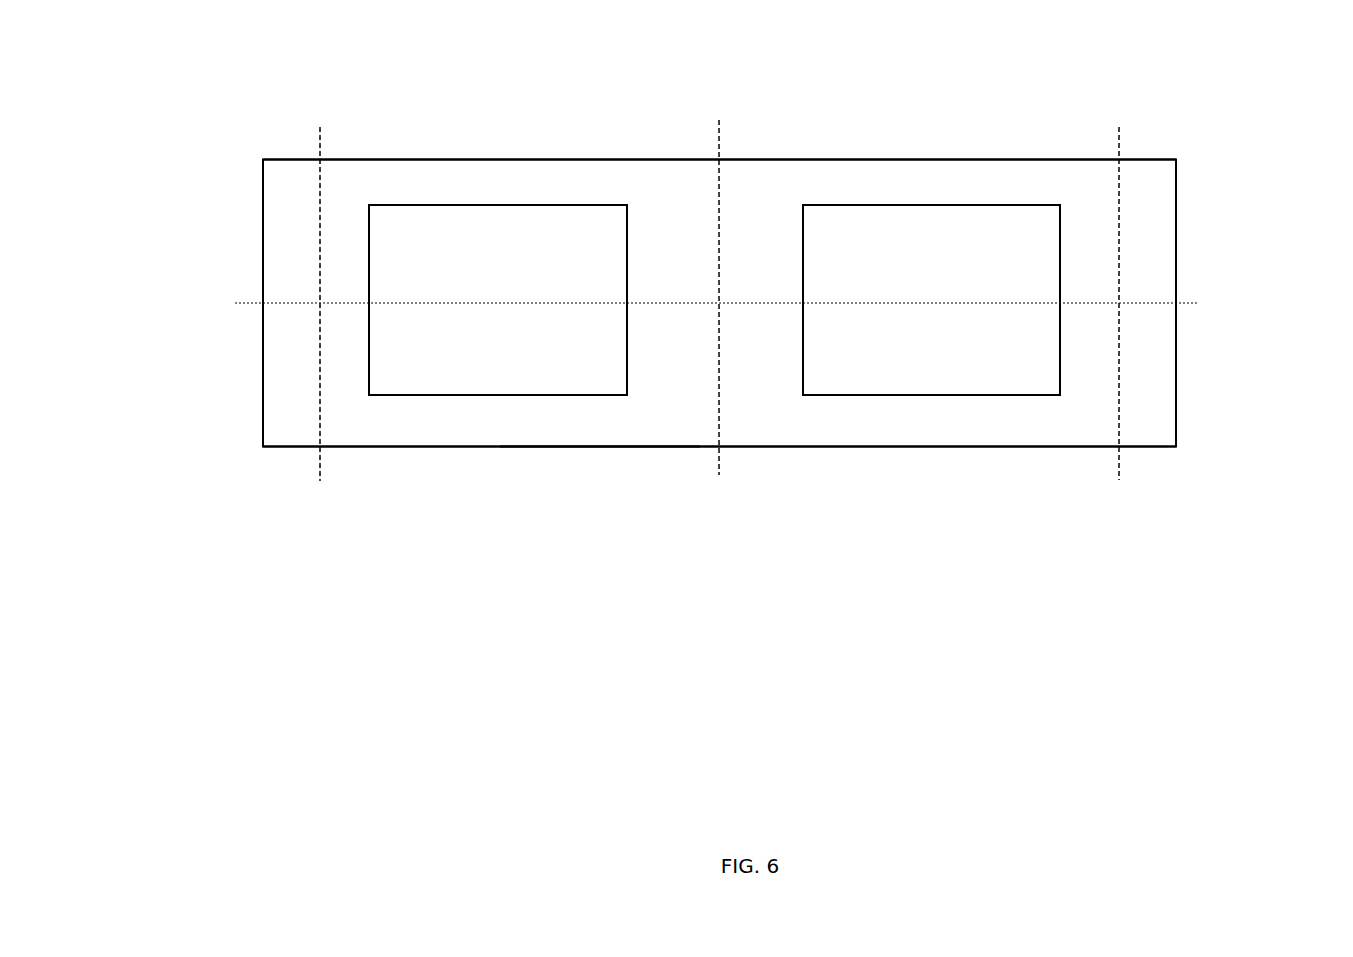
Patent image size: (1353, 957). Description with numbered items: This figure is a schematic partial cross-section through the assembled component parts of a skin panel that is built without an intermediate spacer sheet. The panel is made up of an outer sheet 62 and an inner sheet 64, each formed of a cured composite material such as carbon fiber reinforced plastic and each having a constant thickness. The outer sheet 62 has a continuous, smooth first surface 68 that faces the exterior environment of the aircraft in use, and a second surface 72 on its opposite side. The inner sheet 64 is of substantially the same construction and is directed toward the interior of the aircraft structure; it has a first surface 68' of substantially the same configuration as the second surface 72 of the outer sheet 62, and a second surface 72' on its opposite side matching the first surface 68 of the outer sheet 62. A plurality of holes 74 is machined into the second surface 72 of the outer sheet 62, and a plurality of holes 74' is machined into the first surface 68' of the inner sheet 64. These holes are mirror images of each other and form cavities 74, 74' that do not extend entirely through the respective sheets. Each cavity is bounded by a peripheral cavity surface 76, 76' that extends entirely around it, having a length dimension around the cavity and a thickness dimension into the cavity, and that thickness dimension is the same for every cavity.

The outer sheet 62 is at (1180, 204).
The inner sheet 64 is at (1178, 418).
The first surface 68 is at (719, 102).
The first surface 68' is at (750, 274).
The second surface 72 is at (211, 303).
The second surface 72' is at (600, 489).
The holes 74 is at (968, 227).
The holes 74' is at (391, 300).
The peripheral cavity surface 76 is at (550, 235).
The peripheral cavity surface 76' is at (404, 354).